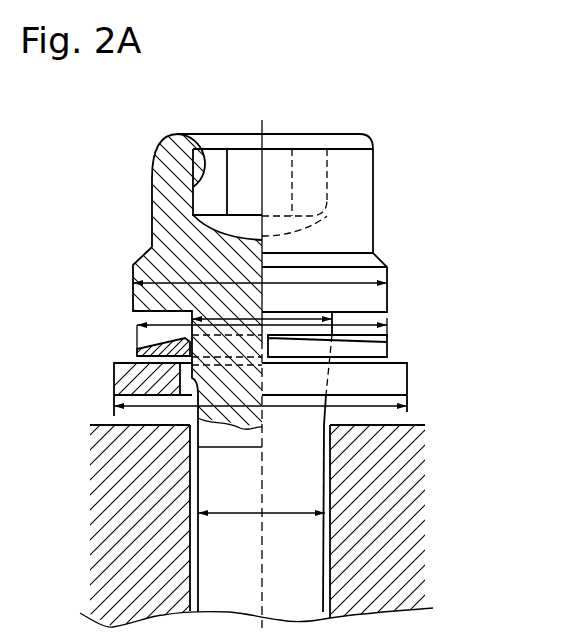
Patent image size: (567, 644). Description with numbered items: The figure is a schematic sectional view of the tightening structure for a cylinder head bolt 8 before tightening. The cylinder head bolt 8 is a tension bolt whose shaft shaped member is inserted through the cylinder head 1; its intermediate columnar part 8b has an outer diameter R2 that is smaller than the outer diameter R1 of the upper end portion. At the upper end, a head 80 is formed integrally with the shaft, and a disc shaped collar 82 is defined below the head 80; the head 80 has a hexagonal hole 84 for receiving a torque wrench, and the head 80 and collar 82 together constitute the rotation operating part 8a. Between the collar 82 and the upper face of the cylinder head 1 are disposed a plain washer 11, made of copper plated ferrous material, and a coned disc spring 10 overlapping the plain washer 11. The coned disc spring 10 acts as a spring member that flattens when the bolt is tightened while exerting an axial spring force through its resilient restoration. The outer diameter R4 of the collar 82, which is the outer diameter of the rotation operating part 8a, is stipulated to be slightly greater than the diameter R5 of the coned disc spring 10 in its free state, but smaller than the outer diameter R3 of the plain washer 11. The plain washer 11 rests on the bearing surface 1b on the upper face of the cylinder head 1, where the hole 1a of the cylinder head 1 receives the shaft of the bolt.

The cylinder head 1 is at (102, 481).
The through hole of base member 1a is at (327, 492).
The bearing surface 1b is at (383, 426).
The cylinder head bolt 8 is at (323, 545).
The rotation operating part 8a is at (483, 168).
The intermediate columnar part 8b is at (298, 587).
The head 80 is at (374, 181).
The collar 82 is at (388, 272).
The hexagonal hole 84 is at (205, 141).
The coned disc spring 10 is at (387, 350).
The plain washer 11 is at (398, 387).
The outer diameter of upper end portion R1 is at (290, 302).
The outer diameter of intermediate columnar part R2 is at (236, 514).
The outer diameter of plain washer R3 is at (265, 408).
The outer diameter of collar R4 is at (340, 290).
The diameter of coned disc spring R5 is at (350, 330).